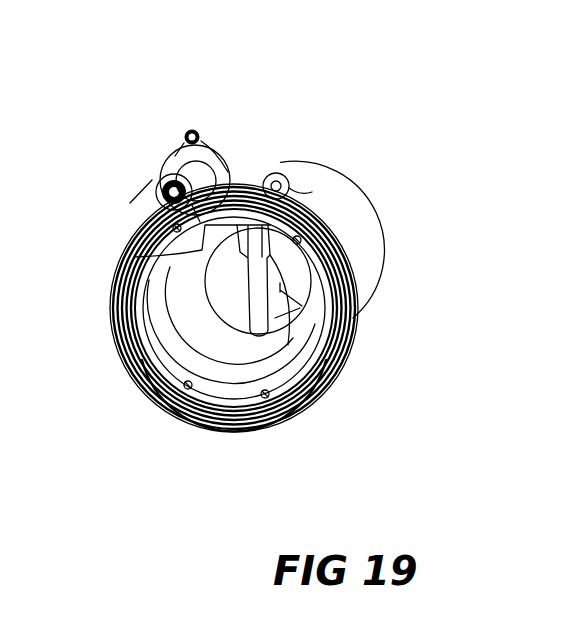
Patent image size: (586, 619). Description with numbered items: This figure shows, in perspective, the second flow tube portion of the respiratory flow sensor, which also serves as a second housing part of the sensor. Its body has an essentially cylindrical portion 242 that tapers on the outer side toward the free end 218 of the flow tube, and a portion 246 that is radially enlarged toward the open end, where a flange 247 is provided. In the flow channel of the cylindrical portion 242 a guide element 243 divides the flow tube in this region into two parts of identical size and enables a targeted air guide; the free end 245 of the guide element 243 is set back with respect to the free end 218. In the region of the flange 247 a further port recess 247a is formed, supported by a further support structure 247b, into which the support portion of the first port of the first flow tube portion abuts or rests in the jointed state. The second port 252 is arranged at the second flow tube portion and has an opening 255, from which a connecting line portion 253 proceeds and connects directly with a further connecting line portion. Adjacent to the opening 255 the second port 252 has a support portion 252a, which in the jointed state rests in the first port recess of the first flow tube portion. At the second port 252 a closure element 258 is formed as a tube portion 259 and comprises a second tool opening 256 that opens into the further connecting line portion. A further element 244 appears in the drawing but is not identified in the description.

The free end 218 is at (377, 206).
The essentially cylindrical portion 242 is at (384, 292).
The guide element 243 is at (265, 345).
The bowl 244 is at (197, 333).
The free end of guide element 245 is at (368, 264).
The radially widening portion 246 is at (341, 397).
The flange 247 is at (350, 354).
The further port recess 247a is at (270, 164).
The further support structure 247b is at (315, 193).
The second port 252 is at (165, 153).
The support portion 252a is at (117, 262).
The connecting line portion 253 is at (237, 155).
The opening 255 is at (155, 189).
The second tool opening 256 is at (195, 126).
The closure element 258 is at (222, 128).
The tube portion 259 is at (200, 133).